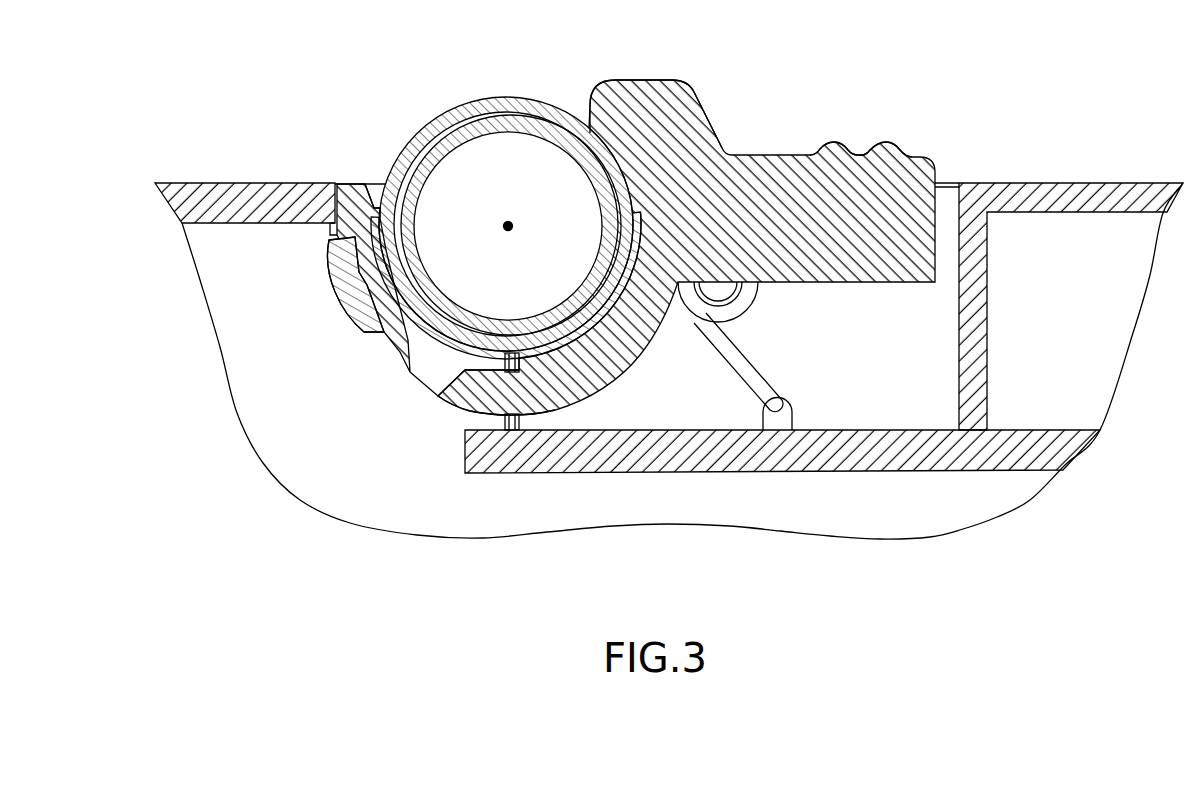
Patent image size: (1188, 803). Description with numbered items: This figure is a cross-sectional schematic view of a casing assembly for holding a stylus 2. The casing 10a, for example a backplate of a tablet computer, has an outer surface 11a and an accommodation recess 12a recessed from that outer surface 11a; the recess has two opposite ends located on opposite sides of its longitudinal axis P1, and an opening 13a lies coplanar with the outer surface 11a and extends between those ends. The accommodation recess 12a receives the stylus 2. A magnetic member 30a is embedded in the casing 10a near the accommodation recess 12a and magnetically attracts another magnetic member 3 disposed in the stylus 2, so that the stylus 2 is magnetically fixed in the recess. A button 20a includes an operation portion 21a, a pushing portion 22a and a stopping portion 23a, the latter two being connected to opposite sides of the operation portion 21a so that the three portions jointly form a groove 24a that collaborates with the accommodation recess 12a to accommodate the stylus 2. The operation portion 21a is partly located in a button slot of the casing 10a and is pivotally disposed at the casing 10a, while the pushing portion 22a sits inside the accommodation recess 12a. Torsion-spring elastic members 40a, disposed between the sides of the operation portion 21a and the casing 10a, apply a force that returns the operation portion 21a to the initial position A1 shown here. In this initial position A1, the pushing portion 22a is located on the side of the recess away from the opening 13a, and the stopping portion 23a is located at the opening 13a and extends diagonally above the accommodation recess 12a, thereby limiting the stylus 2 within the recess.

The stylus 2 is at (498, 100).
The magnetic member 3 is at (410, 216).
The longitudinal axis P1 is at (508, 222).
The casing 10a is at (1074, 194).
The outer surface 11a is at (210, 176).
The accommodation recess 12a is at (382, 265).
The opening 13a is at (370, 176).
The button 20a is at (785, 133).
The operation portion 21a is at (858, 177).
The pushing portion 22a is at (498, 390).
The stopping portion 23a is at (650, 92).
The groove 24a is at (566, 354).
The magnetic member 30a is at (352, 285).
The elastic member 40a is at (743, 368).
The initial position A1 is at (910, 130).